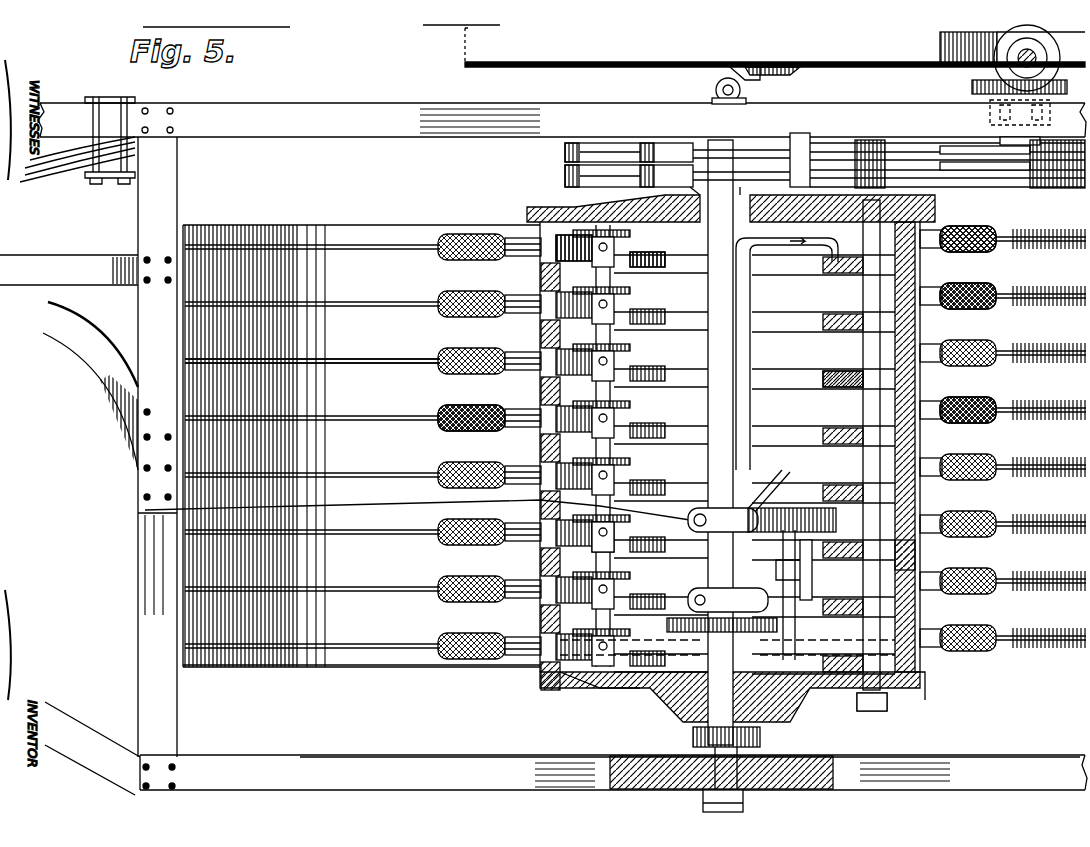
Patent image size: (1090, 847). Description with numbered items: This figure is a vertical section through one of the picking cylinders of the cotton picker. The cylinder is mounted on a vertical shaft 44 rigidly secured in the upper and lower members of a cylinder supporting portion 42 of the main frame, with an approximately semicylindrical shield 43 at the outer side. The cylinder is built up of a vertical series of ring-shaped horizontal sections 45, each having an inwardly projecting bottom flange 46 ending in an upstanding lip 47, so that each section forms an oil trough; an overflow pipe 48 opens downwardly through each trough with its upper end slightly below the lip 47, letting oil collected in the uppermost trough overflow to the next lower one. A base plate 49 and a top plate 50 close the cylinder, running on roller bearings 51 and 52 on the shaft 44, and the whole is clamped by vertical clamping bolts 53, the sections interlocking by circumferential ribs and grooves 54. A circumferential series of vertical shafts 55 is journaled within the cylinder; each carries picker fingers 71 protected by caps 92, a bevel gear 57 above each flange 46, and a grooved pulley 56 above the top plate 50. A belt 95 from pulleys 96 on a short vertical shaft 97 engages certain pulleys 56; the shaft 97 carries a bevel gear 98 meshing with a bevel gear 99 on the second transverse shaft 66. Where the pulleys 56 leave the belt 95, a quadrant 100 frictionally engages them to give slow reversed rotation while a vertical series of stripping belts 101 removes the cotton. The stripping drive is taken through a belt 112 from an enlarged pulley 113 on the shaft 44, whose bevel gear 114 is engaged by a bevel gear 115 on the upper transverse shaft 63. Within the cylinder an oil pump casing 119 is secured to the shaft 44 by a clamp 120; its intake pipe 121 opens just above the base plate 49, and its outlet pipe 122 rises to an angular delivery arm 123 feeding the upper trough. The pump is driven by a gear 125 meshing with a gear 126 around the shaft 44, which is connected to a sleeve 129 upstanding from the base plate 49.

The cylinder supporting portion 42 is at (390, 766).
The semicylindrical shield 43 is at (312, 666).
The vertical shaft 44 is at (708, 357).
The ring-shaped horizontal section 45 is at (922, 666).
The bottom flange 46 is at (838, 548).
The upstanding lip 47 is at (828, 562).
The overflow pipe 48 is at (843, 371).
The base plate 49 is at (805, 690).
The top plate 50 is at (658, 212).
The roller bearing 51 is at (693, 736).
The roller bearing 52 is at (699, 216).
The vertical clamping bolt 53 is at (863, 410).
The interengaging circumferential ribs and grooves 54 is at (918, 556).
The vertical shaft 55 is at (616, 552).
The grooved pulley 56 is at (563, 170).
The bevel gear 57 is at (634, 475).
The upper transverse shaft 63 is at (716, 90).
The second transverse shaft 66 is at (942, 50).
The picker finger 71 is at (372, 364).
The protecting cap 92 is at (458, 380).
The belt 95 is at (906, 148).
The pulley 96 is at (992, 152).
The short vertical shaft 97 is at (1010, 136).
The bevel gear 98 is at (972, 86).
The bevel gear 99 is at (1037, 95).
The quadrant 100 is at (800, 134).
The stripping belt 101 is at (1010, 268).
The belt 112 is at (497, 58).
The enlarged pulley 113 is at (556, 68).
The bevel gear 114 is at (790, 72).
The bevel gear 115 is at (746, 60).
The pump casing 119 is at (795, 500).
The clamp 120 is at (718, 518).
The intake pipe 121 is at (784, 590).
The outlet pipe 122 is at (752, 358).
The angular delivery arm 123 is at (818, 246).
The gear 125 is at (800, 624).
The gear 126 is at (655, 602).
The sleeve 129 is at (622, 692).